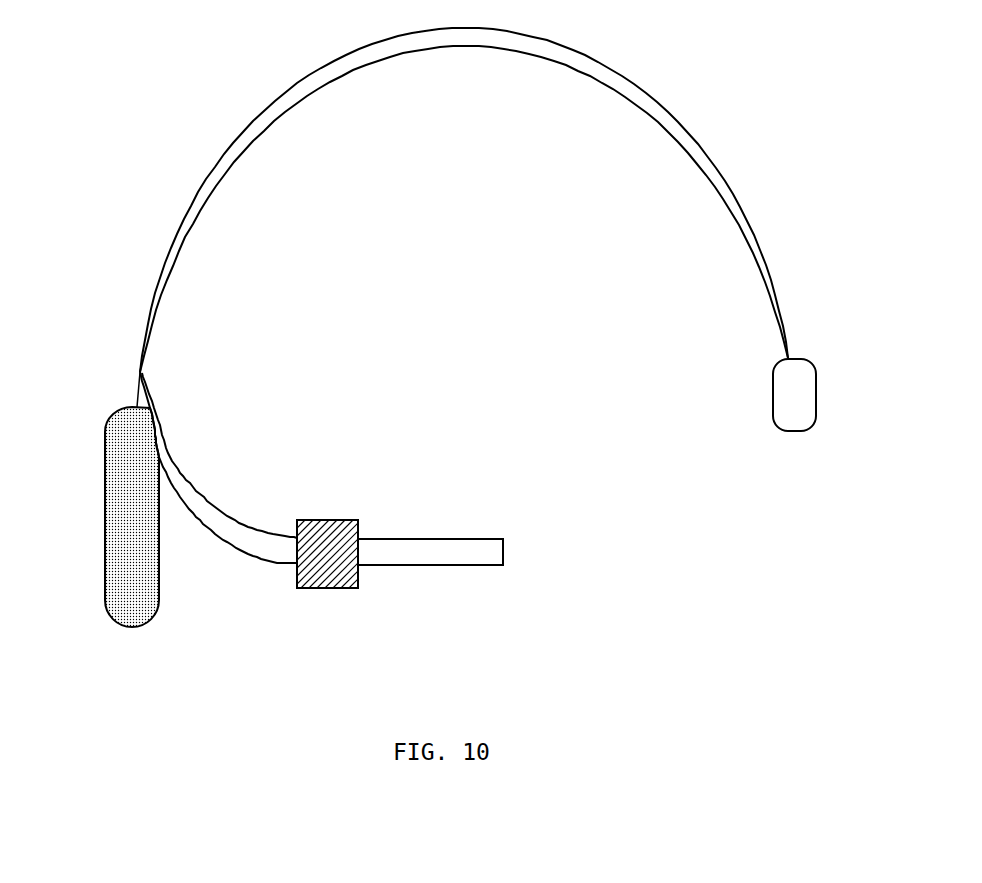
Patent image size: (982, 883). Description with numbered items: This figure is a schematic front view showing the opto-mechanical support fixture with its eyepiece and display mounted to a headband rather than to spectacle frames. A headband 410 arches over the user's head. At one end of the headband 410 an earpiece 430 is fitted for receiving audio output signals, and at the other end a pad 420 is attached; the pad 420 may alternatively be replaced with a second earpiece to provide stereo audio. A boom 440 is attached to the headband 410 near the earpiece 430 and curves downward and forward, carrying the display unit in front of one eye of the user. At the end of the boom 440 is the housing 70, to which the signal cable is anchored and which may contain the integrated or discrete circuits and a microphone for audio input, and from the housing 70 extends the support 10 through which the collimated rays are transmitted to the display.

The support 10 is at (410, 535).
The housing 70 is at (322, 587).
The headband 410 is at (228, 140).
The pad 420 is at (800, 399).
The earpiece 430 is at (113, 520).
The boom 440 is at (222, 508).